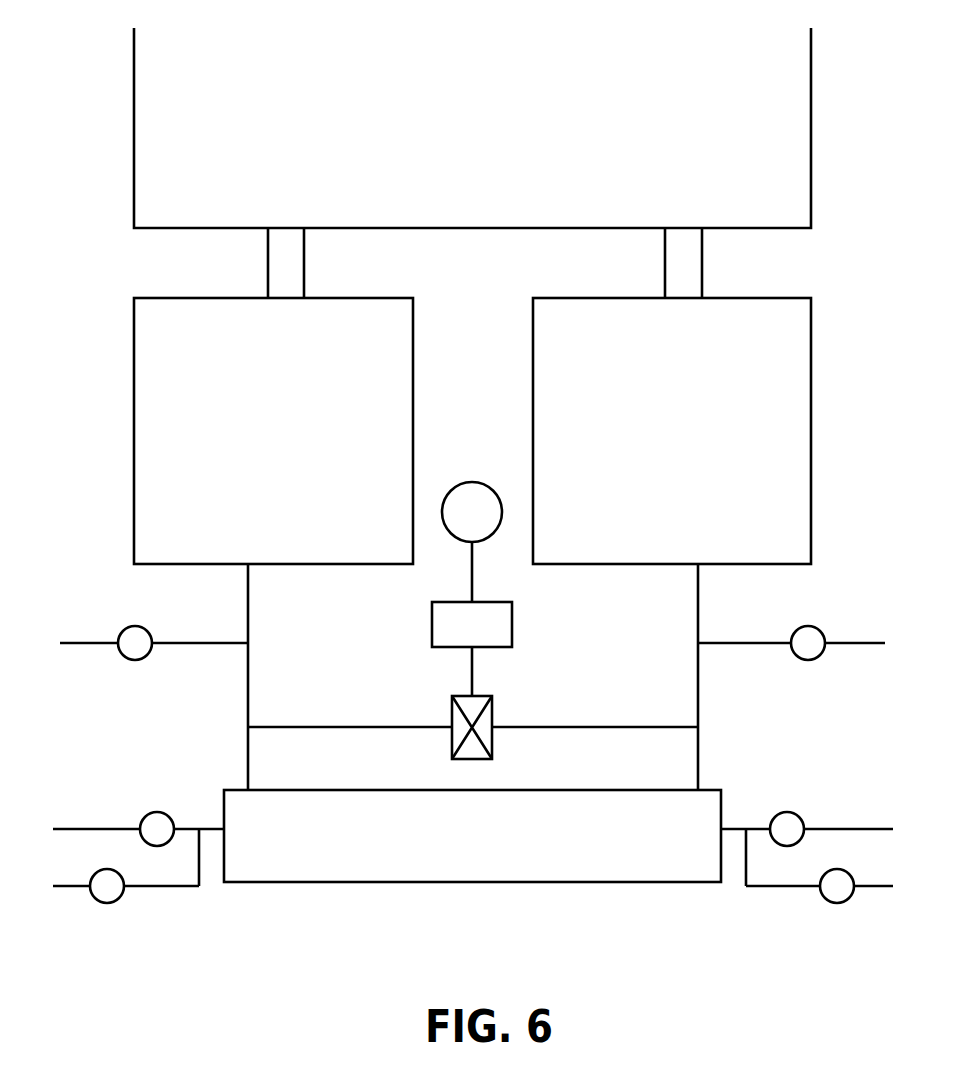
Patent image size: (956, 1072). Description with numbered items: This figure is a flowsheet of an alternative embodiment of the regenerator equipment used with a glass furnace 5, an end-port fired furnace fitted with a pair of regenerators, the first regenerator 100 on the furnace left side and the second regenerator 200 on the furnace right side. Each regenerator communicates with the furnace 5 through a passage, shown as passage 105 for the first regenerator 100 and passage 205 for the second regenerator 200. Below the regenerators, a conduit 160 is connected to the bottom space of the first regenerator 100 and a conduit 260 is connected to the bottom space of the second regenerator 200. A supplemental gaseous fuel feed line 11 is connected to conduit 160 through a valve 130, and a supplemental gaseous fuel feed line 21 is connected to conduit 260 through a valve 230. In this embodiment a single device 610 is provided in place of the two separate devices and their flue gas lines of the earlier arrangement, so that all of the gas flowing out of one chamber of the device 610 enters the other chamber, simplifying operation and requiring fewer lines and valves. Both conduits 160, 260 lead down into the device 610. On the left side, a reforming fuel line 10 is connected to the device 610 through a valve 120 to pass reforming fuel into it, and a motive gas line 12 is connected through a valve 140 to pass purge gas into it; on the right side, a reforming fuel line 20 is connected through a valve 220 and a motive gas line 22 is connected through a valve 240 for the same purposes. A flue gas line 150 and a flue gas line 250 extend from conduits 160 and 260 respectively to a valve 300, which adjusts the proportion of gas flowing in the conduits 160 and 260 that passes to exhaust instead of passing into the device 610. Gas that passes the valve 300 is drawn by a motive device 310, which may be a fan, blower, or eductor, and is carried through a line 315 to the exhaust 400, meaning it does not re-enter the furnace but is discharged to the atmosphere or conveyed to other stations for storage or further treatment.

The glass furnace 5 is at (472, 128).
The first outlet conduit 105 is at (305, 262).
The second outlet conduit 205 is at (703, 262).
The first regenerator 100 is at (257, 443).
The second regenerator 200 is at (656, 443).
The conduit 160 is at (250, 590).
The conduit 260 is at (697, 590).
The device 610 is at (456, 844).
The flue gas line 150 is at (350, 713).
The flue gas line 250 is at (595, 713).
The valve 300 is at (484, 694).
The motive device 310 is at (472, 624).
The line 315 is at (491, 619).
The exhaust 400 is at (472, 512).
The valve 130 is at (135, 629).
The supplemental gaseous fuel feed line 11 is at (142, 643).
The valve 120 is at (157, 814).
The reforming fuel line 10 is at (126, 851).
The valve 140 is at (107, 901).
The motive gas line 12 is at (113, 886).
The valve 230 is at (808, 629).
The supplemental gaseous fuel feed line 21 is at (805, 643).
The valve 220 is at (787, 814).
The reforming fuel line 20 is at (819, 851).
The valve 240 is at (837, 901).
The motive gas line 22 is at (832, 886).